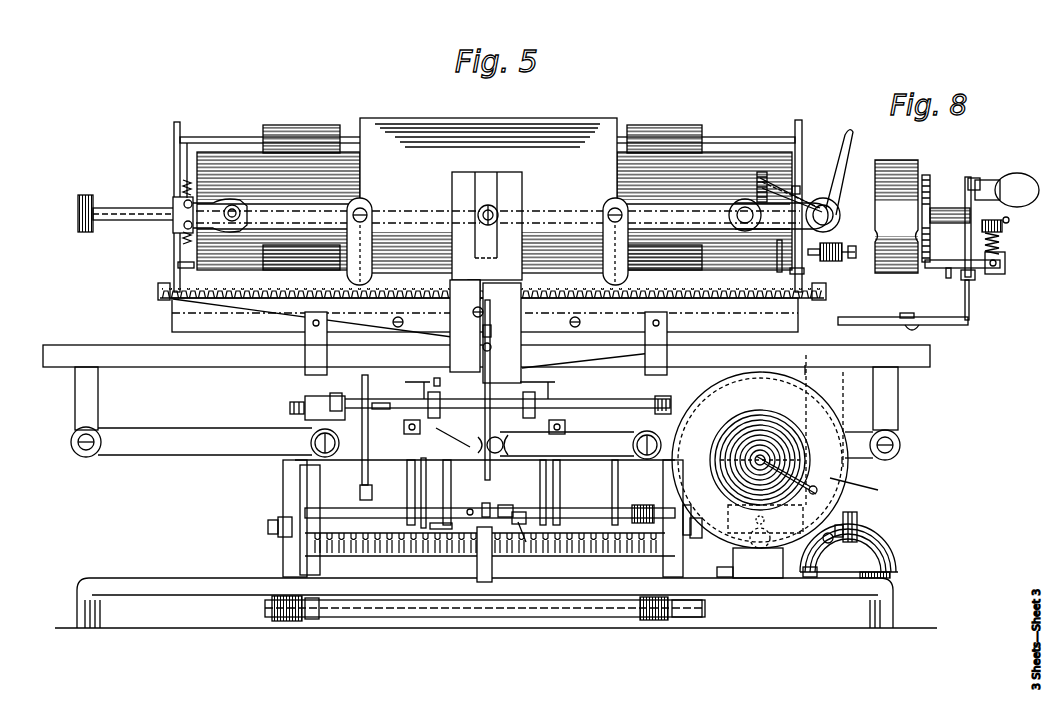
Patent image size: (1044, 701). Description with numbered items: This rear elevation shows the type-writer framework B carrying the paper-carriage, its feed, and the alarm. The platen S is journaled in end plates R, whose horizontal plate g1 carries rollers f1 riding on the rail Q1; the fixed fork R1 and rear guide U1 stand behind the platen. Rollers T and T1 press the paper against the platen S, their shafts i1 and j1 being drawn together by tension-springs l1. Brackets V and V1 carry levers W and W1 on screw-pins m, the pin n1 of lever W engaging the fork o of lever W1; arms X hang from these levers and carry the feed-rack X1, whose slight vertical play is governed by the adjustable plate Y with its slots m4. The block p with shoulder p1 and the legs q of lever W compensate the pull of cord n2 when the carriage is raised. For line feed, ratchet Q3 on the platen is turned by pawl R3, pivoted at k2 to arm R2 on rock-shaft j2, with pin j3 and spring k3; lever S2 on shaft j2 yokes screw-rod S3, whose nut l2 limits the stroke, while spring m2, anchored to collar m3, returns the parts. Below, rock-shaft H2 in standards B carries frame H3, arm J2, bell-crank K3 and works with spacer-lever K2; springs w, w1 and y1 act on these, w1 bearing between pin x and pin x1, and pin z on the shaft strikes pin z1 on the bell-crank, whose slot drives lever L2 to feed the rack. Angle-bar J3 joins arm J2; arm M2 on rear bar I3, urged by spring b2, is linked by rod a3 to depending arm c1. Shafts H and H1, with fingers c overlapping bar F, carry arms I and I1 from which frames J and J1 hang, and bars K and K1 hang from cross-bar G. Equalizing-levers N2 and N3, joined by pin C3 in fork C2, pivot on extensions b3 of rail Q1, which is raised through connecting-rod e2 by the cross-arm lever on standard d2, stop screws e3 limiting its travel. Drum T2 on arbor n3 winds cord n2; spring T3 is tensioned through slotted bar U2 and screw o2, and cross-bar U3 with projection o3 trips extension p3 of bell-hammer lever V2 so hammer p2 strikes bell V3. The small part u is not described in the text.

In FIG. 5, the roller shaft i1 is at (487, 130).
In FIG. 5, the frictional roller T is at (482, 130).
In FIG. 5, the frictional roller T1 is at (482, 257).
In FIG. 5, the rotary cylindrical platen S is at (704, 211).
In FIG. 8, the rotary cylindrical platen S is at (896, 216).
In FIG. 5, the final guide U1 is at (488, 195).
In FIG. 5, the fixed vertical fork R1 is at (490, 180).
In FIG. 5, the lever W is at (330, 215).
In FIG. 5, the lever W1 is at (650, 215).
In FIG. 5, the downwardly-extending arm X is at (487, 241).
In FIG. 5, the fork or yoke o is at (485, 202).
In FIG. 5, the lateral pin n1 is at (482, 210).
In FIG. 5, the bracket V is at (172, 200).
In FIG. 5, the block p is at (183, 224).
In FIG. 5, the inner edge p1 is at (192, 200).
In FIG. 5, the legs q is at (222, 201).
In FIG. 5, the screw-pin m is at (240, 211).
In FIG. 5, the coil tension-spring l1 is at (184, 160).
In FIG. 5, the roller shaft j1 is at (178, 265).
In FIG. 5, the bracket V1 is at (781, 216).
In FIG. 5, the rock-shaft j2 is at (840, 215).
In FIG. 8, the rock-shaft j2 is at (1013, 213).
In FIG. 5, the cross-arm lever S2 is at (845, 172).
In FIG. 8, the cross-arm lever S2 is at (1007, 190).
In FIG. 5, the pivot k2 is at (826, 203).
In FIG. 8, the pivot k2 is at (965, 288).
In FIG. 5, the ratchet Q3 is at (770, 176).
In FIG. 8, the ratchet Q3 is at (928, 175).
In FIG. 5, the pawl R3 is at (789, 187).
In FIG. 8, the pawl R3 is at (932, 268).
In FIG. 5, the lateral pin j3 is at (793, 181).
In FIG. 8, the lateral pin j3 is at (945, 283).
In FIG. 5, the arm R2 is at (791, 184).
In FIG. 8, the arm R2 is at (1006, 262).
In FIG. 5, the adjustable nut l2 is at (831, 244).
In FIG. 5, the screw-rod S3 is at (851, 260).
In FIG. 8, the screw-rod S3 is at (975, 178).
In FIG. 5, the carriage feed-rack X1 is at (158, 290).
In FIG. 5, the end plates R is at (172, 318).
In FIG. 5, the horizontal plate g1 is at (485, 321).
In FIG. 5, the cord n2 is at (416, 333).
In FIG. 5, the rollers f1 is at (305, 340).
In FIG. 5, the horizontal rail Q1 is at (206, 367).
In FIG. 5, the downward extensions b3 is at (485, 413).
In FIG. 5, the equalizing-lever N2 is at (218, 442).
In FIG. 5, the equalizing-lever N3 is at (580, 445).
In FIG. 5, the vertically-adjustable plate Y is at (465, 326).
In FIG. 5, the lever L2 is at (502, 381).
In FIG. 5, the coil-spring w is at (470, 304).
In FIG. 5, the vertical slots m4 is at (482, 330).
In FIG. 5, the bar F is at (488, 382).
In FIG. 5, the depending arm c1 is at (442, 383).
In FIG. 5, the bent finger c is at (484, 403).
In FIG. 5, the rock-shaft H is at (605, 410).
In FIG. 5, the arms I is at (630, 412).
In FIG. 5, the arms I1 is at (305, 410).
In FIG. 5, the rock-shaft H1 is at (381, 412).
In FIG. 5, the cross-bar G is at (485, 420).
In FIG. 5, the connecting rod or link a3 is at (448, 434).
In FIG. 5, the roller or pin C3 is at (487, 444).
In FIG. 5, the fork C2 is at (503, 442).
In FIG. 5, the cross-bar U3 is at (718, 398).
In FIG. 5, the coil-spring T3 is at (800, 437).
In FIG. 5, the arbor n3 is at (732, 474).
In FIG. 5, the tension-screw o2 is at (776, 461).
In FIG. 5, the upward extension p3 is at (758, 521).
In FIG. 5, the spring-drum T2 is at (848, 475).
In FIG. 5, the slotted bar U2 is at (875, 490).
In FIG. 5, the bell-hammer lever V2 is at (835, 516).
In FIG. 5, the hammer p2 is at (858, 527).
In FIG. 5, the forward extension o3 is at (825, 537).
In FIG. 5, the bell V3 is at (849, 551).
In FIG. 5, the adjustable screws e3 is at (758, 564).
In FIG. 5, the standard d2 is at (758, 563).
In FIG. 5, the connecting-rod e2 is at (812, 385).
In FIG. 5, the framework B is at (496, 544).
In FIG. 5, the horizontal rock-shaft H2 is at (490, 521).
In FIG. 5, the spacer-lever K2 is at (488, 565).
In FIG. 5, the bell-crank lever K3 is at (477, 538).
In FIG. 5, the coil tension-spring b2 is at (440, 530).
In FIG. 5, the coil tension-spring y1 is at (526, 545).
In FIG. 5, the lateral pin x1 is at (630, 512).
In FIG. 5, the lateral pin x is at (681, 529).
In FIG. 5, the coil tension-spring w1 is at (660, 545).
In FIG. 5, the nut u is at (298, 530).
In FIG. 5, the angle-bar J3 is at (372, 426).
In FIG. 5, the upwardly-extending arm J2 is at (368, 494).
In FIG. 5, the vertically-suspended frame J1 is at (377, 493).
In FIG. 5, the rectangular frame H3 is at (315, 520).
In FIG. 5, the bar K1 is at (401, 492).
In FIG. 5, the arm M2 is at (457, 492).
In FIG. 5, the projecting pin z is at (469, 503).
In FIG. 5, the pin z1 is at (483, 499).
In FIG. 5, the rear bar I3 is at (505, 502).
In FIG. 5, the vertically-suspended frame J is at (540, 478).
In FIG. 5, the bar K is at (560, 482).
In FIG. 8, the bar K is at (911, 315).
In FIG. 8, the adjusting-collar m3 is at (1003, 226).
In FIG. 8, the coil tension-spring m2 is at (1003, 245).
In FIG. 8, the coil tension-spring k3 is at (975, 276).